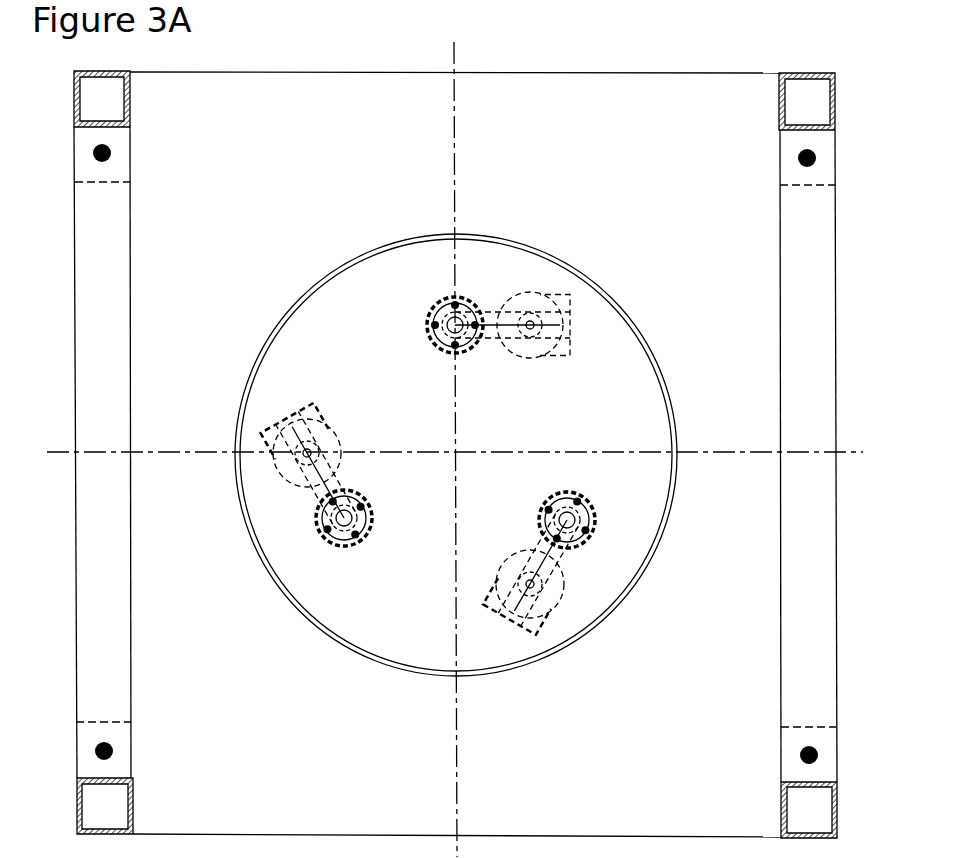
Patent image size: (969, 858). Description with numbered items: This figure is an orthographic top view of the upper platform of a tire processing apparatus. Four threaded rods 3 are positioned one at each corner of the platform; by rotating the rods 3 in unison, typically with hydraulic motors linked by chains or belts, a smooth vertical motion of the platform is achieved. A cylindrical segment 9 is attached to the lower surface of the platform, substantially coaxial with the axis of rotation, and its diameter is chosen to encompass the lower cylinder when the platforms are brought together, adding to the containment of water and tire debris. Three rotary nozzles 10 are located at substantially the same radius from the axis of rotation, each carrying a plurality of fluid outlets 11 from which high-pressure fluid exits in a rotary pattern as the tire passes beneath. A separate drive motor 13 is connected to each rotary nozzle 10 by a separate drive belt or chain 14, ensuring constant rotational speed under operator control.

The threaded rod 3 is at (96, 150).
The cylindrical segment 9 is at (649, 348).
The rotary nozzle 10 is at (333, 542).
The fluid outlet 11 is at (548, 509).
The drive motor 13 is at (333, 433).
The drive belt or chain 14 is at (313, 495).